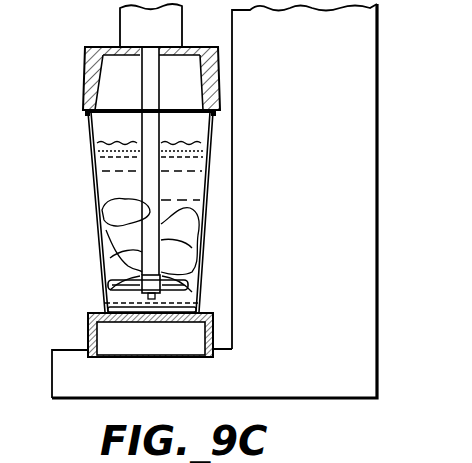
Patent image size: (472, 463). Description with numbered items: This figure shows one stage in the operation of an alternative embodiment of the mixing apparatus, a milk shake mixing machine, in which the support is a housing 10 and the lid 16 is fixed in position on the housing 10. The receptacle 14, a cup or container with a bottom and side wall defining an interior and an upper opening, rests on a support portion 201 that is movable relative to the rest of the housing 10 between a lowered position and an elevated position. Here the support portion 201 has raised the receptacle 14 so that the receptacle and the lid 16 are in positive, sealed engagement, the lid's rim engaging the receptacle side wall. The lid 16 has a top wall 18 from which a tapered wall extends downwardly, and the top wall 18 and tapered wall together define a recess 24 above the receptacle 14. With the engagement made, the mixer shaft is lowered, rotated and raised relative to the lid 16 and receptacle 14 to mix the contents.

The housing 10 is at (382, 230).
The receptacle 14 is at (103, 263).
The lid 16 is at (150, 65).
The top wall 18 is at (100, 47).
The recess 24 is at (118, 75).
The support portion 201 is at (210, 335).